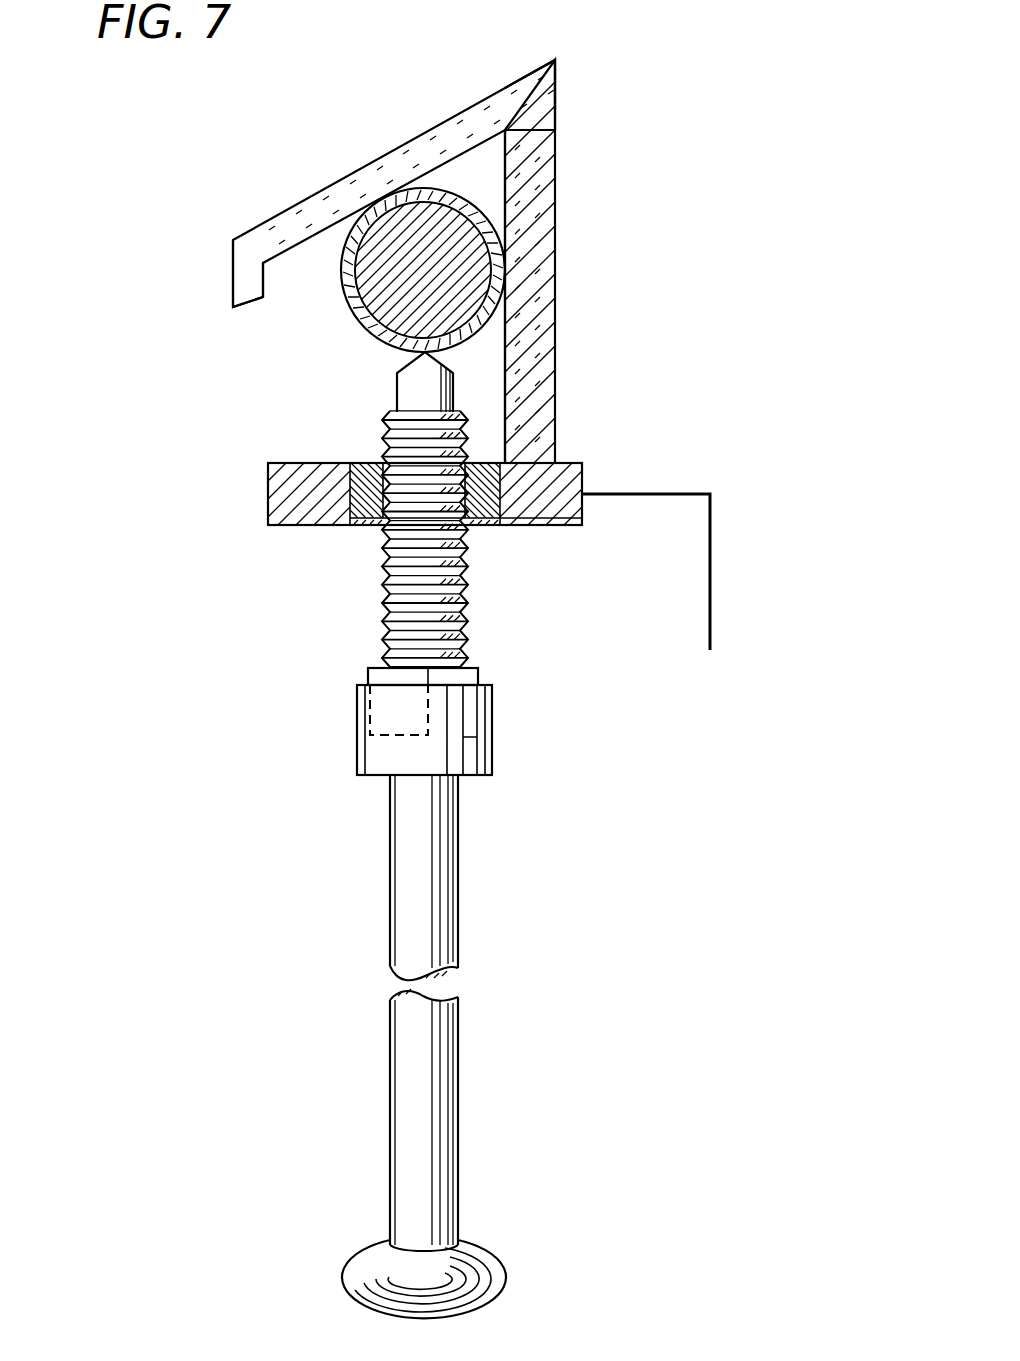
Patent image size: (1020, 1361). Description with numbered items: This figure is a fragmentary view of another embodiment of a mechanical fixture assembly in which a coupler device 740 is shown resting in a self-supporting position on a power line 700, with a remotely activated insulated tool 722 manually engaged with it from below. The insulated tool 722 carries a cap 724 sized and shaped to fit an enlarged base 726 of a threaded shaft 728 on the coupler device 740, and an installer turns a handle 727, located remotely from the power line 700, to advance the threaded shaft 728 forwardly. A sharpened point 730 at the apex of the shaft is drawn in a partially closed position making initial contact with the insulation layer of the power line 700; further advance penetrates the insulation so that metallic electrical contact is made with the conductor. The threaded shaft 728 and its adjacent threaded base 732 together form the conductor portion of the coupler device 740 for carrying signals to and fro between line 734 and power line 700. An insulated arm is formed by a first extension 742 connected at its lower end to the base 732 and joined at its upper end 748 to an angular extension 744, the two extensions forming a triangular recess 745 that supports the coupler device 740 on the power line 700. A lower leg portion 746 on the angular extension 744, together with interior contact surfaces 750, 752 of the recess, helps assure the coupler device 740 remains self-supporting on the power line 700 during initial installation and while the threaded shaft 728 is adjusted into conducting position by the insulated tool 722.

The power line 700 is at (380, 297).
The remotely activated insulated tool 722 is at (457, 937).
The cap 724 is at (492, 750).
The enlarged base 726 is at (478, 676).
The handle 727 is at (345, 1272).
The threaded shaft 728 is at (383, 632).
The sharpened point 730 is at (425, 352).
The threaded base 732 is at (358, 462).
The line 734 is at (712, 530).
The coupler device 740 is at (170, 200).
The first extension 742 is at (535, 322).
The angular extension 744 is at (317, 208).
The triangular recess 745 is at (500, 172).
The lower leg portion 746 is at (233, 288).
The upper end 748 is at (542, 96).
The interior contact surface 750 is at (380, 197).
The interior contact surface 752 is at (505, 266).